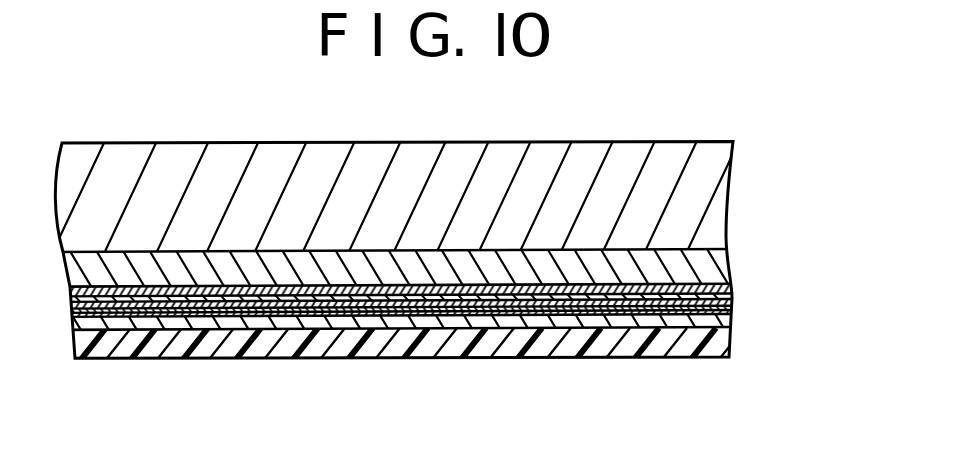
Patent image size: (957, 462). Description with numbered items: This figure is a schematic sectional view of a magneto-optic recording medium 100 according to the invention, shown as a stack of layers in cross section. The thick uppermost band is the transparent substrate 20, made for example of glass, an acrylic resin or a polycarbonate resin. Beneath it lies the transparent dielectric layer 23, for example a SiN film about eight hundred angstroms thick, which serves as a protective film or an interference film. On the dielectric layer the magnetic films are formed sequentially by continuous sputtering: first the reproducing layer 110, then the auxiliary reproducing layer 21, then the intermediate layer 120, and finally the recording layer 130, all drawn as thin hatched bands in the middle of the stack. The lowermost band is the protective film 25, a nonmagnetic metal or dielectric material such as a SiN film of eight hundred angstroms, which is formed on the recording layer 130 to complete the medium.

The magneto-optic recording medium 100 is at (278, 117).
The transparent substrate 20 is at (715, 193).
The transparent dielectric layer 23 is at (717, 263).
The reproducing layer 110 is at (725, 288).
The auxiliary reproducing layer 21 is at (725, 302).
The intermediate layer 120 is at (674, 312).
The recording layer 130 is at (580, 320).
The protective film 25 is at (465, 336).